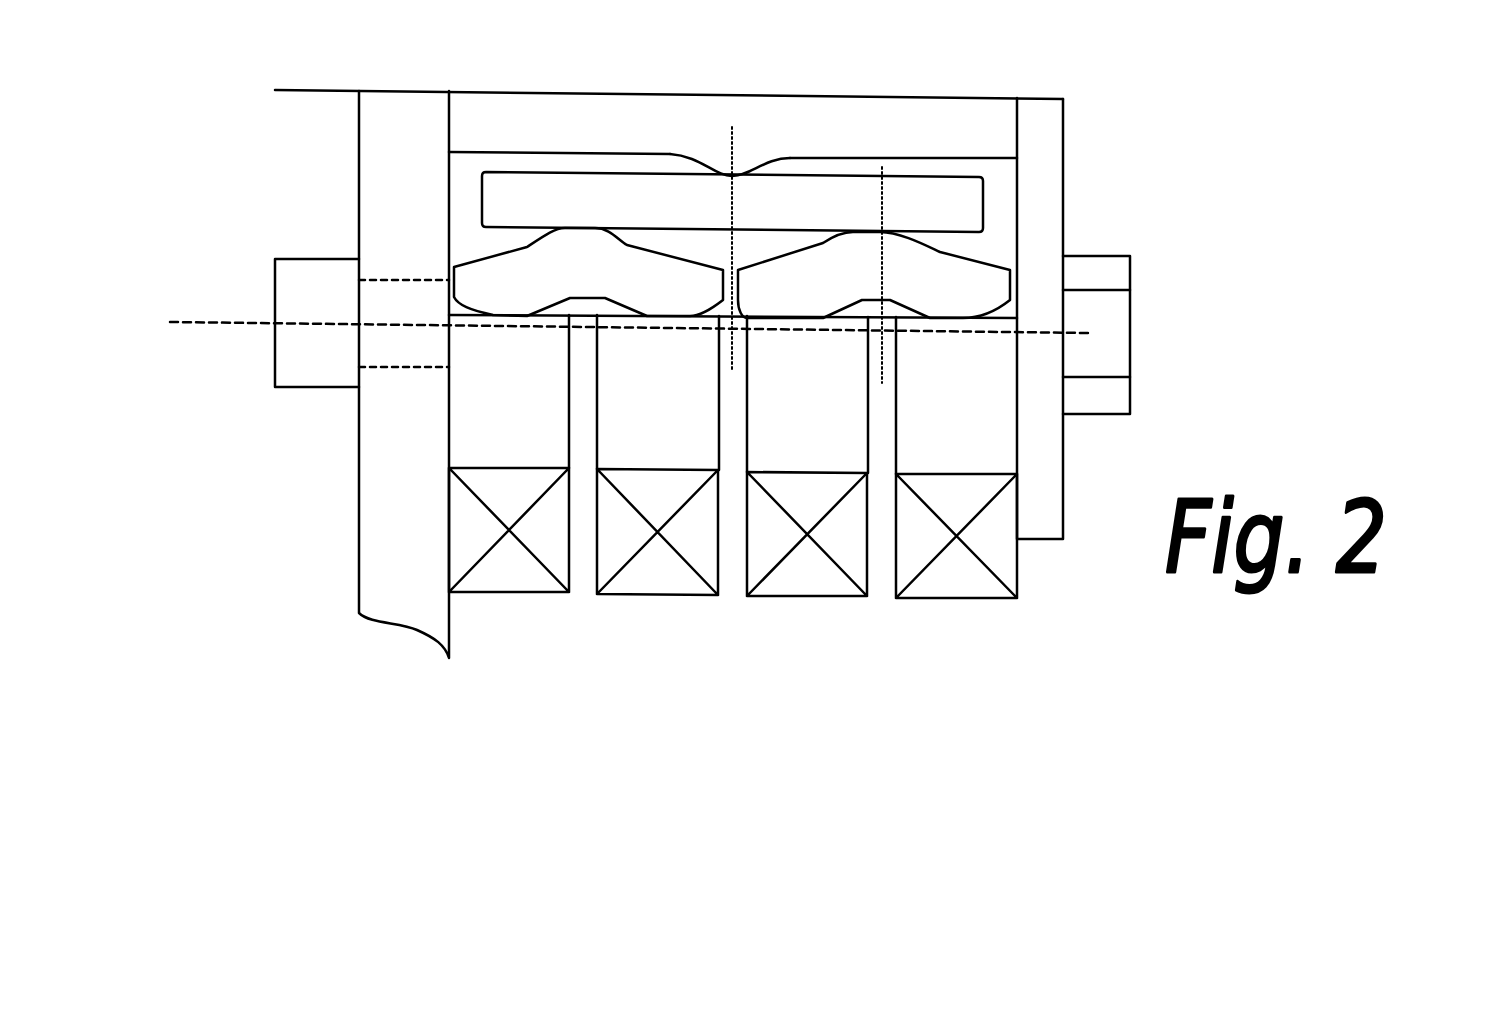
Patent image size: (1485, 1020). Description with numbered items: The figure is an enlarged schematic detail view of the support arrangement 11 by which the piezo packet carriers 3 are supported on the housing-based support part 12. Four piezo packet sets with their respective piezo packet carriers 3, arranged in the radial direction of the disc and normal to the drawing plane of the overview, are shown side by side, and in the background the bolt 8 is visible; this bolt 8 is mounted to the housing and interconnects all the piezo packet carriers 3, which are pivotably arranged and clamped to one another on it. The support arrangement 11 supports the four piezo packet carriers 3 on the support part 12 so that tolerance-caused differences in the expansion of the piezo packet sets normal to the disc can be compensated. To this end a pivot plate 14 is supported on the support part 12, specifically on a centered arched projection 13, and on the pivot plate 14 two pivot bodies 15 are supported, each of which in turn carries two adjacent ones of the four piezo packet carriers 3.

The piezo packet carrier 3 is at (532, 442).
The bolt 8 is at (298, 369).
The support arrangement 11 is at (1156, 153).
The housing-based support part 12 is at (887, 120).
The centered arched projection 13 is at (747, 167).
The pivot plate 14 is at (950, 203).
The pivot body 15 is at (488, 287).